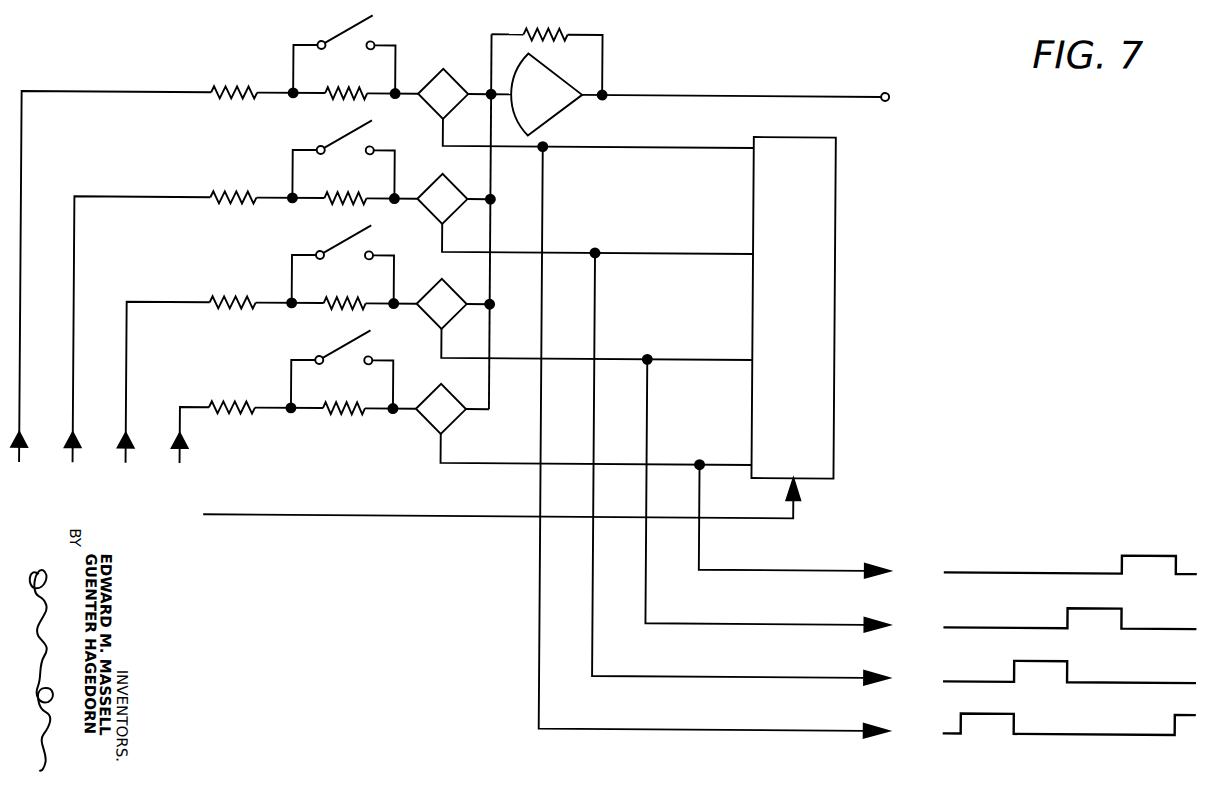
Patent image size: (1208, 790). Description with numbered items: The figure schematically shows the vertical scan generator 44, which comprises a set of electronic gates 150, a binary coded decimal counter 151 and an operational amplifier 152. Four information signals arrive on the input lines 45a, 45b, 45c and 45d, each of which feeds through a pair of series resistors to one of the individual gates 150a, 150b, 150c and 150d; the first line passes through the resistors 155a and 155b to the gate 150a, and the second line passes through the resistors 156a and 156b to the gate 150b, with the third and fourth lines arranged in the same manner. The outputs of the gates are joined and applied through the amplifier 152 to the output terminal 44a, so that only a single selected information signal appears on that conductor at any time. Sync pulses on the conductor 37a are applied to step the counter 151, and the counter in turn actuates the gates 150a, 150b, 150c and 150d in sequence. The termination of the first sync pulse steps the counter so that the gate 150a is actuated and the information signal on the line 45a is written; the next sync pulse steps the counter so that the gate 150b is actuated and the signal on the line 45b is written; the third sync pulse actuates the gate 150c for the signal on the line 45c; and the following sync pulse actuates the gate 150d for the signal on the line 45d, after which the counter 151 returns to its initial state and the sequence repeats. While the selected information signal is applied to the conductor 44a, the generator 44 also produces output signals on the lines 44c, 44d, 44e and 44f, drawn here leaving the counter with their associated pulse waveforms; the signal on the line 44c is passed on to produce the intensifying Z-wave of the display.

The vertical scan generator 44 is at (740, 51).
The output terminal 44a is at (887, 92).
The output signal line 44c is at (816, 728).
The output signal line 44d is at (816, 675).
The output signal line 44e is at (816, 622).
The output signal line 44f is at (816, 568).
The input line 45a is at (134, 96).
The input line 45b is at (127, 200).
The input line 45c is at (154, 305).
The input line 45d is at (181, 409).
The sync pulse conductor 37a is at (394, 519).
The electronic gates 150 is at (436, 492).
The gate 150a is at (448, 77).
The gate 150b is at (450, 184).
The gate 150c is at (450, 289).
The gate 150d is at (450, 394).
The binary coded decimal counter 151 is at (834, 464).
The operational amplifier 152 is at (563, 108).
The resistor 155a is at (236, 93).
The resistor 155b is at (359, 97).
The resistor 156a is at (239, 201).
The resistor 156b is at (356, 201).